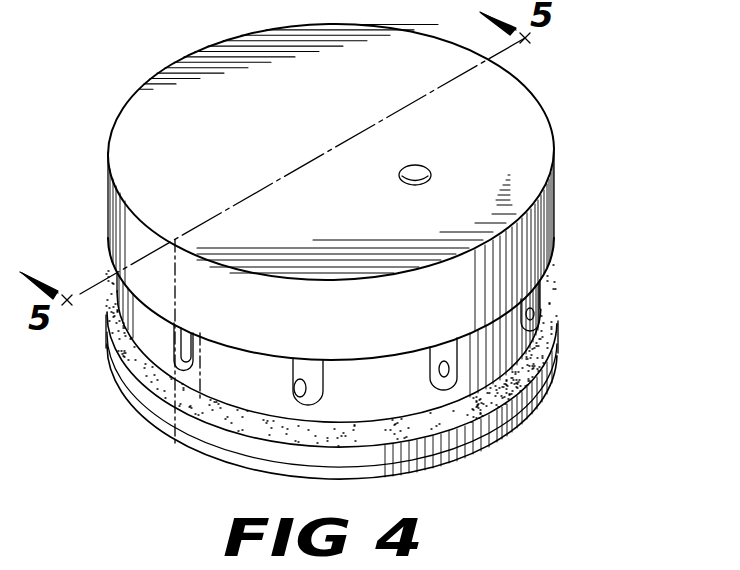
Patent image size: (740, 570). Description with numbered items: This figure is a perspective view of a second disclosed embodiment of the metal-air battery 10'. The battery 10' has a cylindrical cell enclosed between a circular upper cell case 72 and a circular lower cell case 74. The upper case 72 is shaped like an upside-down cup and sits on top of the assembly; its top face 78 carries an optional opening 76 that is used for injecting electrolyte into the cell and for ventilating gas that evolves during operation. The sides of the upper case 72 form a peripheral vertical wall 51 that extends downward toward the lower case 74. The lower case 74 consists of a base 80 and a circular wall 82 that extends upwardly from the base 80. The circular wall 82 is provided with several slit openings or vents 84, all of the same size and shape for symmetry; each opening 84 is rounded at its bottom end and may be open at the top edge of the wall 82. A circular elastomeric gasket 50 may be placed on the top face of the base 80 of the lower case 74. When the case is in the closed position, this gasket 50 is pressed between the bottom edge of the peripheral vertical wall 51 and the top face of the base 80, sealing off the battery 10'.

The metal-air battery 10' is at (355, 265).
The circular elastomeric gasket 50 is at (390, 433).
The peripheral vertical wall 51 is at (557, 226).
The upper cell case 72 is at (118, 118).
The lower cell case 74 is at (197, 460).
The opening 76 is at (413, 167).
The top face 78 is at (172, 107).
The base 80 is at (527, 408).
The circular wall 82 is at (150, 328).
The slit openings or vents 84 is at (173, 353).